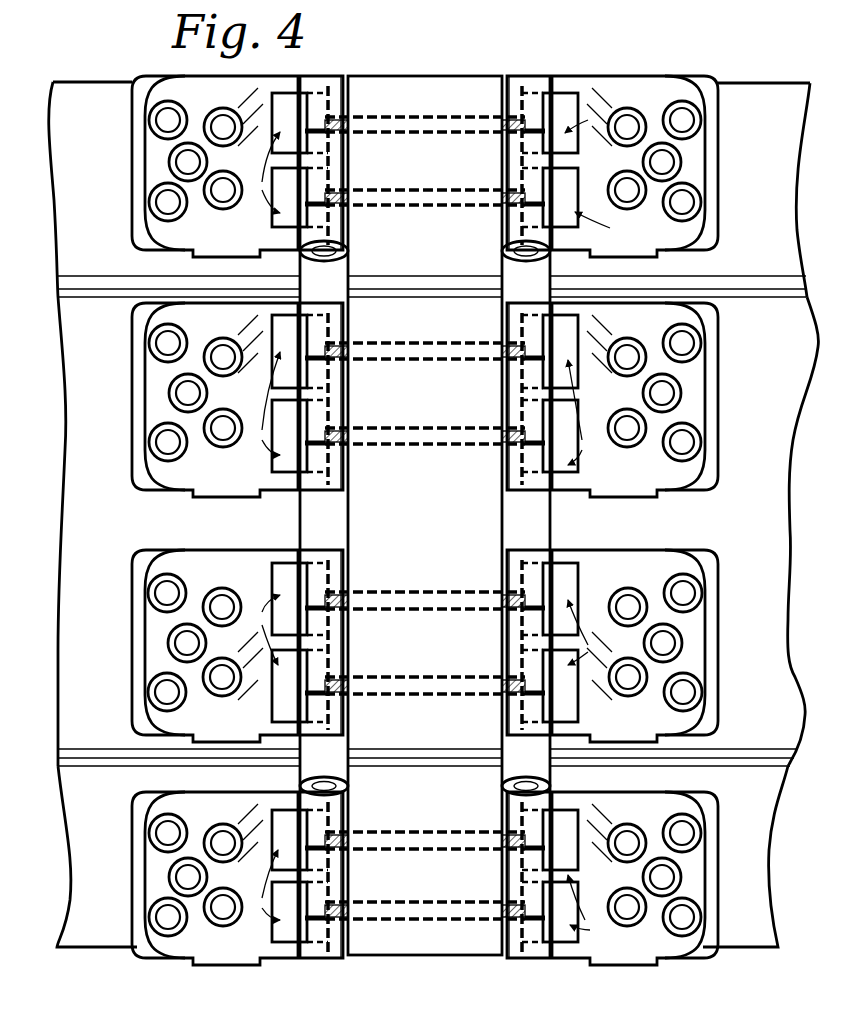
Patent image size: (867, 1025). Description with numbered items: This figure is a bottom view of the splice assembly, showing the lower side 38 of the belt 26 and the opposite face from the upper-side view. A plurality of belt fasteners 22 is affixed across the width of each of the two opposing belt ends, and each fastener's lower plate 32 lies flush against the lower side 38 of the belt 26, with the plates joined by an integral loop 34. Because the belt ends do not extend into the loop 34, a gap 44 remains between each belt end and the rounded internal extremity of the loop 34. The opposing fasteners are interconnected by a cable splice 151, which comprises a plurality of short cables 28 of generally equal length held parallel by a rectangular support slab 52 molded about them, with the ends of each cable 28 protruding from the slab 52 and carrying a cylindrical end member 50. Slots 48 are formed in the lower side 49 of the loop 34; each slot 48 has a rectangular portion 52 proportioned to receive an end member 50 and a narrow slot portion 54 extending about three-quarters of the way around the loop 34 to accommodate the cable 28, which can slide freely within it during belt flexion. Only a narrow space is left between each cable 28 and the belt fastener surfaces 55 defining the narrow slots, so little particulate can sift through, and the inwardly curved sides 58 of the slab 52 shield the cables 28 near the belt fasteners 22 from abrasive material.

The belt fastener 22 is at (320, 70).
The belt 26 is at (70, 190).
The short cable 28 is at (325, 118).
The lower plate 32 is at (600, 88).
The loop 34 is at (346, 232).
The lower side of the belt 38 is at (72, 395).
The gap 44 is at (330, 262).
The slot 48 is at (438, 518).
The lower side of the loop portion 49 is at (325, 245).
The end member 50 is at (540, 95).
The support slab 52 is at (443, 85).
The narrow slot portion 54 is at (336, 128).
The belt fastener surface 55 is at (536, 85).
The inwardly curved side 58 is at (506, 78).
The cable splice 151 is at (406, 78).